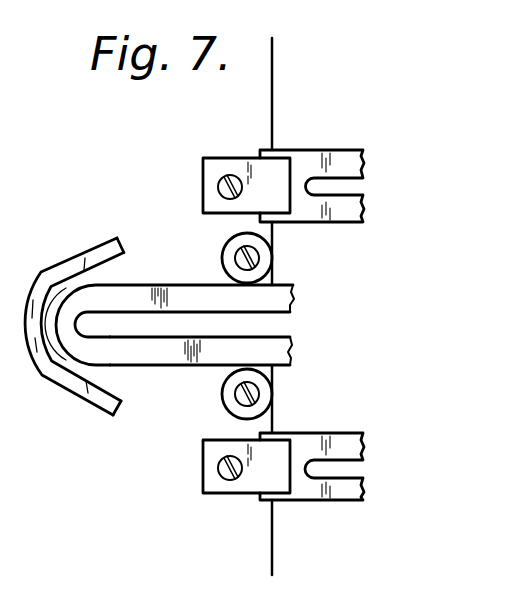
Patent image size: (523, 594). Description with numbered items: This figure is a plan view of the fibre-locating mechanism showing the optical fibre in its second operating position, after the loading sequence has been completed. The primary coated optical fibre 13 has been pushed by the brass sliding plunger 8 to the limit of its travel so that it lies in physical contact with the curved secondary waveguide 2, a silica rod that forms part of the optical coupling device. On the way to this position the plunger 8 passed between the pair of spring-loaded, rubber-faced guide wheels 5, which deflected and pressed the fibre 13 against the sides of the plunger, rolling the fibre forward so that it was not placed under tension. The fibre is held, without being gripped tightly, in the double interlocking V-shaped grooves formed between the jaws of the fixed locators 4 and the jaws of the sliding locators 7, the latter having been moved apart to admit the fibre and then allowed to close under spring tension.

The secondary waveguide 2 is at (36, 272).
The fixed locators 4 is at (215, 167).
The guide wheels 5 is at (262, 262).
The sliding locators 7 is at (318, 162).
The sliding plunger 8 is at (184, 301).
The primary coated optical fibre 13 is at (168, 368).